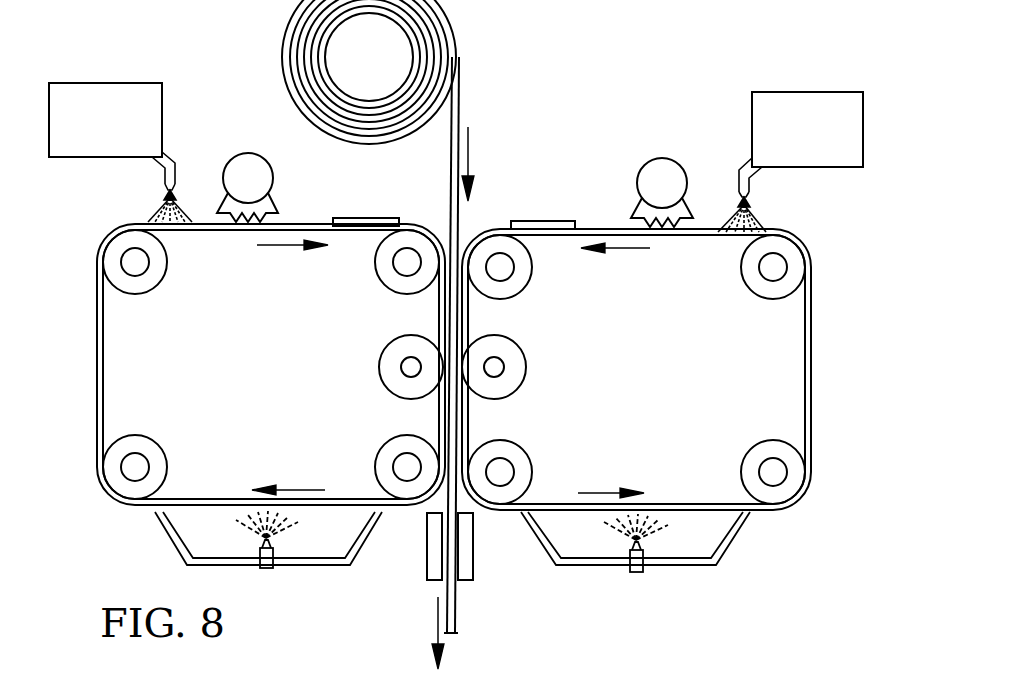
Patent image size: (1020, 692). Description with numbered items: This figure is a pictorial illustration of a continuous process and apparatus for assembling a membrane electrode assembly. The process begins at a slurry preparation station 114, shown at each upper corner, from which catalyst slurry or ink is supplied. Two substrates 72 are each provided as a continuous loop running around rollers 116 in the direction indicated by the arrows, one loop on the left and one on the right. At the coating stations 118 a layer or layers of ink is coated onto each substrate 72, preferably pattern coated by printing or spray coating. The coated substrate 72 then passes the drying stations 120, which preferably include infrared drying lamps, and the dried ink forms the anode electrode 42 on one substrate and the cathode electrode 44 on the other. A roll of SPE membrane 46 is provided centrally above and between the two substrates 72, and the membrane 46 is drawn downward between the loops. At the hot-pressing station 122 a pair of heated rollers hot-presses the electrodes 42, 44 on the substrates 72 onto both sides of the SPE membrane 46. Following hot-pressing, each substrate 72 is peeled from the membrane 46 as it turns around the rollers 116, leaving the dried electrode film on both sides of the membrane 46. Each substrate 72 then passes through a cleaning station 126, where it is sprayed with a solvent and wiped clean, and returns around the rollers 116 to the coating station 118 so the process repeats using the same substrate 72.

The anode electrode 42 is at (360, 217).
The cathode electrode 44 is at (527, 229).
The SPE membrane 46 is at (462, 115).
The substrate 72 is at (97, 362).
The slurry preparation station 114 is at (110, 96).
The rollers 116 is at (167, 262).
The coating station 118 is at (177, 188).
The drying station 120 is at (250, 165).
The hot-pressing station 122 is at (379, 367).
The cleaning station 126 is at (236, 542).